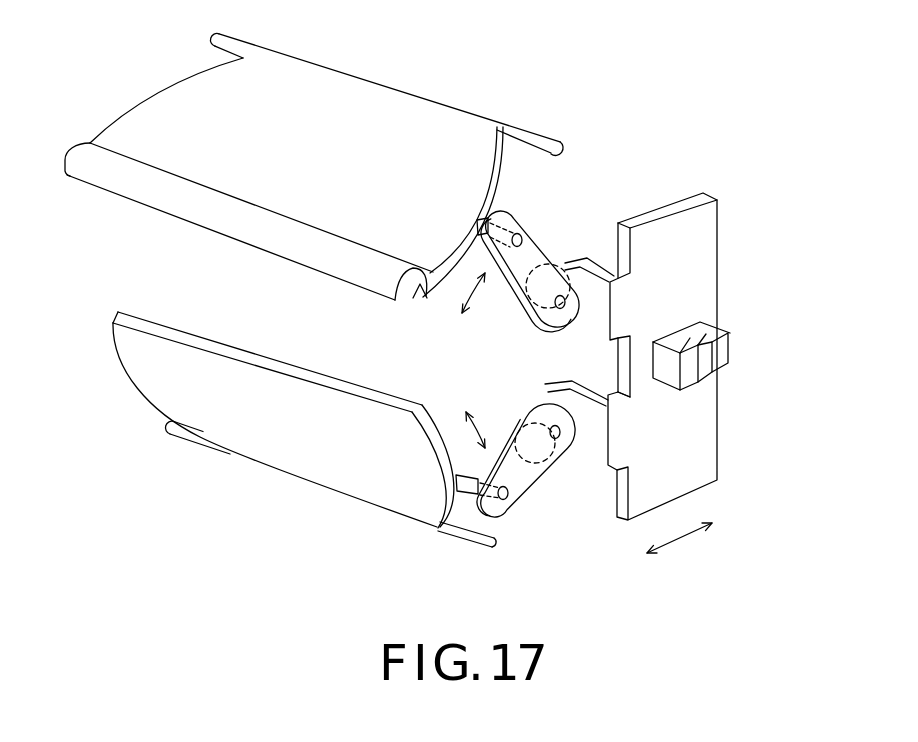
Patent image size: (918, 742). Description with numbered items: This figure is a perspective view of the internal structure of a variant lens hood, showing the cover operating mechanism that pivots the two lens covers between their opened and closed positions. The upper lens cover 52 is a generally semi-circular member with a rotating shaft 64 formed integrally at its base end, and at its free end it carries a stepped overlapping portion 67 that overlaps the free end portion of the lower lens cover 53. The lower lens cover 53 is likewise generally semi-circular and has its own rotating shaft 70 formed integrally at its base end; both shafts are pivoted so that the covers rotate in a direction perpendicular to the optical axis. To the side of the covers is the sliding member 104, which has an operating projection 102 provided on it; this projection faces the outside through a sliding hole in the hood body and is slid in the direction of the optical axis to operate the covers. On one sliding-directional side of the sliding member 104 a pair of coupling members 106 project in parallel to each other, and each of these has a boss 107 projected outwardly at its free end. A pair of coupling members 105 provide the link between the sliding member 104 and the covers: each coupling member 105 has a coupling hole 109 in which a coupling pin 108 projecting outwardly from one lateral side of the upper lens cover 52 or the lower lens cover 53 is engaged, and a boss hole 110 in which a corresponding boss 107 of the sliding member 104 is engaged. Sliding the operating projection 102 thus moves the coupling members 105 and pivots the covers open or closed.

The upper lens cover 52 is at (360, 115).
The lower lens cover 53 is at (297, 455).
The rotating shaft 64 is at (535, 125).
The stepped overlapping portion 67 is at (240, 227).
The rotating shaft 70 is at (460, 537).
The operating projection 102 is at (728, 347).
The sliding member 104 is at (705, 275).
The coupling member 105 is at (540, 250).
The coupling member 106 is at (537, 330).
The boss 107 is at (560, 306).
The coupling pin 108 is at (463, 483).
The coupling hole 109 is at (523, 230).
The boss hole 110 is at (563, 297).